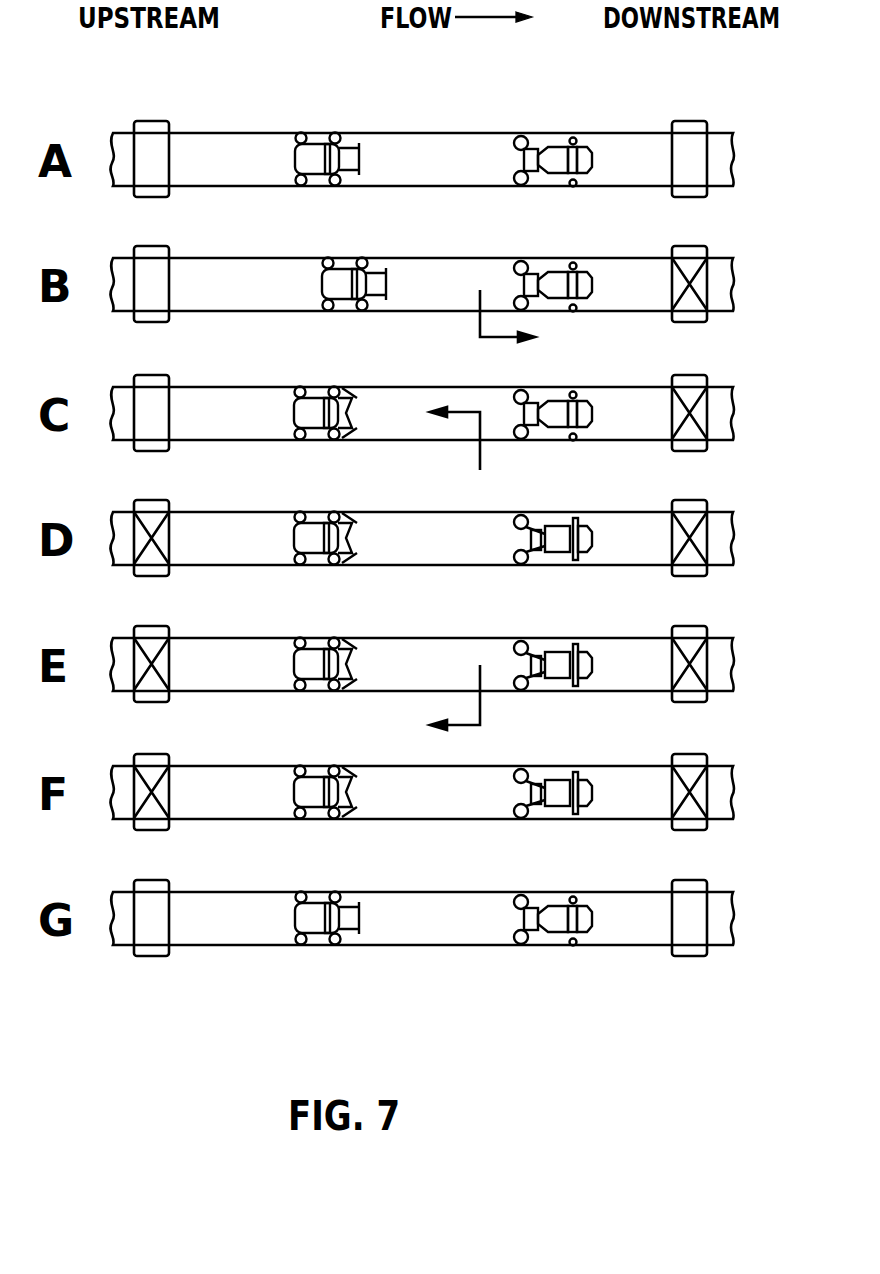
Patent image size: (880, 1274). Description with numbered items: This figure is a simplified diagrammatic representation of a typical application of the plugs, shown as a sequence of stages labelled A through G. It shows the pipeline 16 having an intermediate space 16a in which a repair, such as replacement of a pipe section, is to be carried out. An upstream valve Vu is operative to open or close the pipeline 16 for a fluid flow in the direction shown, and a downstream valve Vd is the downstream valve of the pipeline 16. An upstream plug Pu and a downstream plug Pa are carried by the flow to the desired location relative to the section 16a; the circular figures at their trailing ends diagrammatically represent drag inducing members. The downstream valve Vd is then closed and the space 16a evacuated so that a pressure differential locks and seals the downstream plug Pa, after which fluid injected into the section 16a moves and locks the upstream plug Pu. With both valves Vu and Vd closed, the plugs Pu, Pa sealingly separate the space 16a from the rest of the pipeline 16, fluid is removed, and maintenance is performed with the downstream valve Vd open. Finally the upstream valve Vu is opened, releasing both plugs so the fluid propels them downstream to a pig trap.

The pipeline 16 is at (251, 132).
The intermediate space 16a is at (440, 174).
The upstream valve Vu is at (148, 120).
The downstream valve Vd is at (686, 122).
The upstream plug Pu is at (343, 150).
The downstream (aft) pig Pa is at (557, 137).